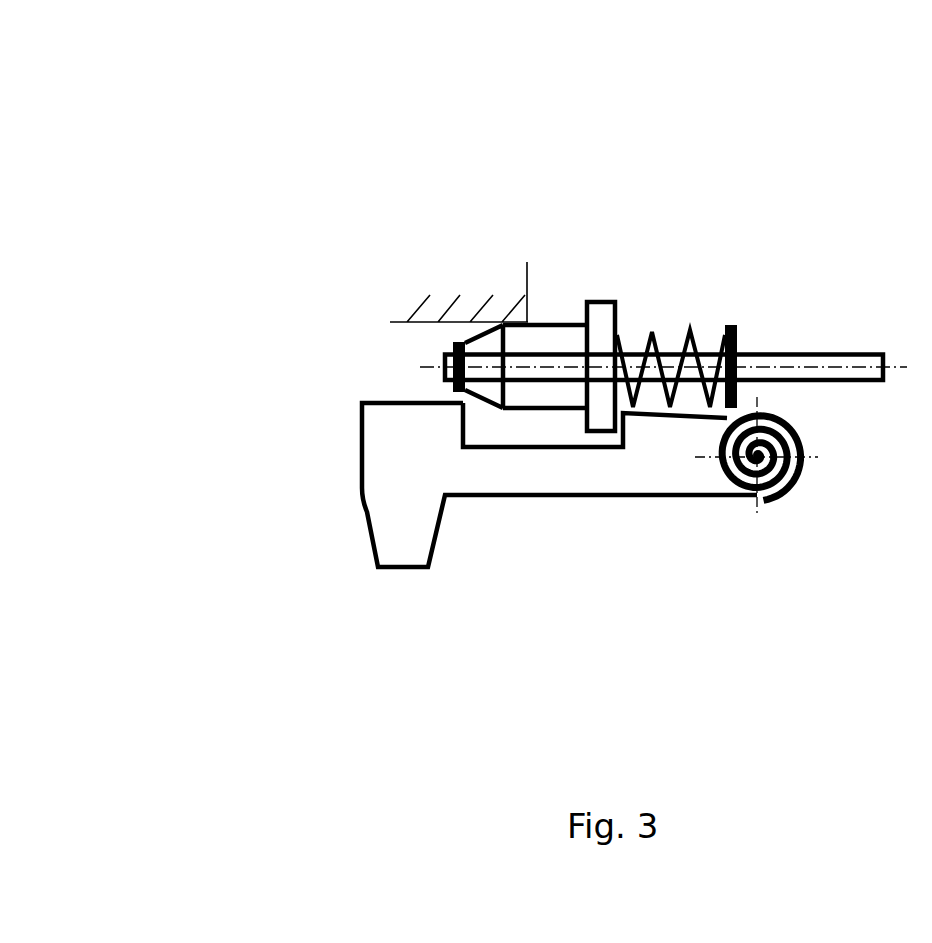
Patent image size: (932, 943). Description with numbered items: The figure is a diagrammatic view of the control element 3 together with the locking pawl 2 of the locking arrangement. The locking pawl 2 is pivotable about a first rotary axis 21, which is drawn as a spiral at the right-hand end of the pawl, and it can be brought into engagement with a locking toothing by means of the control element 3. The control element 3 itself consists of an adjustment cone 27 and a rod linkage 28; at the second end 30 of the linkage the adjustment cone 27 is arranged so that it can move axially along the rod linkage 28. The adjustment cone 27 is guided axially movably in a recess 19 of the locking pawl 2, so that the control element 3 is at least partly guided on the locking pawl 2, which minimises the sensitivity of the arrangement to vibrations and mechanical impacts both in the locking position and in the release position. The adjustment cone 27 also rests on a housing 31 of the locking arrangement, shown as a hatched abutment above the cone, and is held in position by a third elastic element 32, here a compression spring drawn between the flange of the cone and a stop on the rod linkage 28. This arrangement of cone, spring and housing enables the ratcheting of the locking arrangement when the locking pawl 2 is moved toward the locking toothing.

The locking pawl 2 is at (388, 483).
The control element 3 is at (200, 176).
The recess 19 is at (537, 433).
The first rotary axis 21 is at (790, 487).
The adjustment cone 27 is at (553, 335).
The rod linkage 28 is at (767, 367).
The second end 30 is at (520, 410).
The housing 31 is at (468, 308).
The third elastic element 32 is at (660, 352).